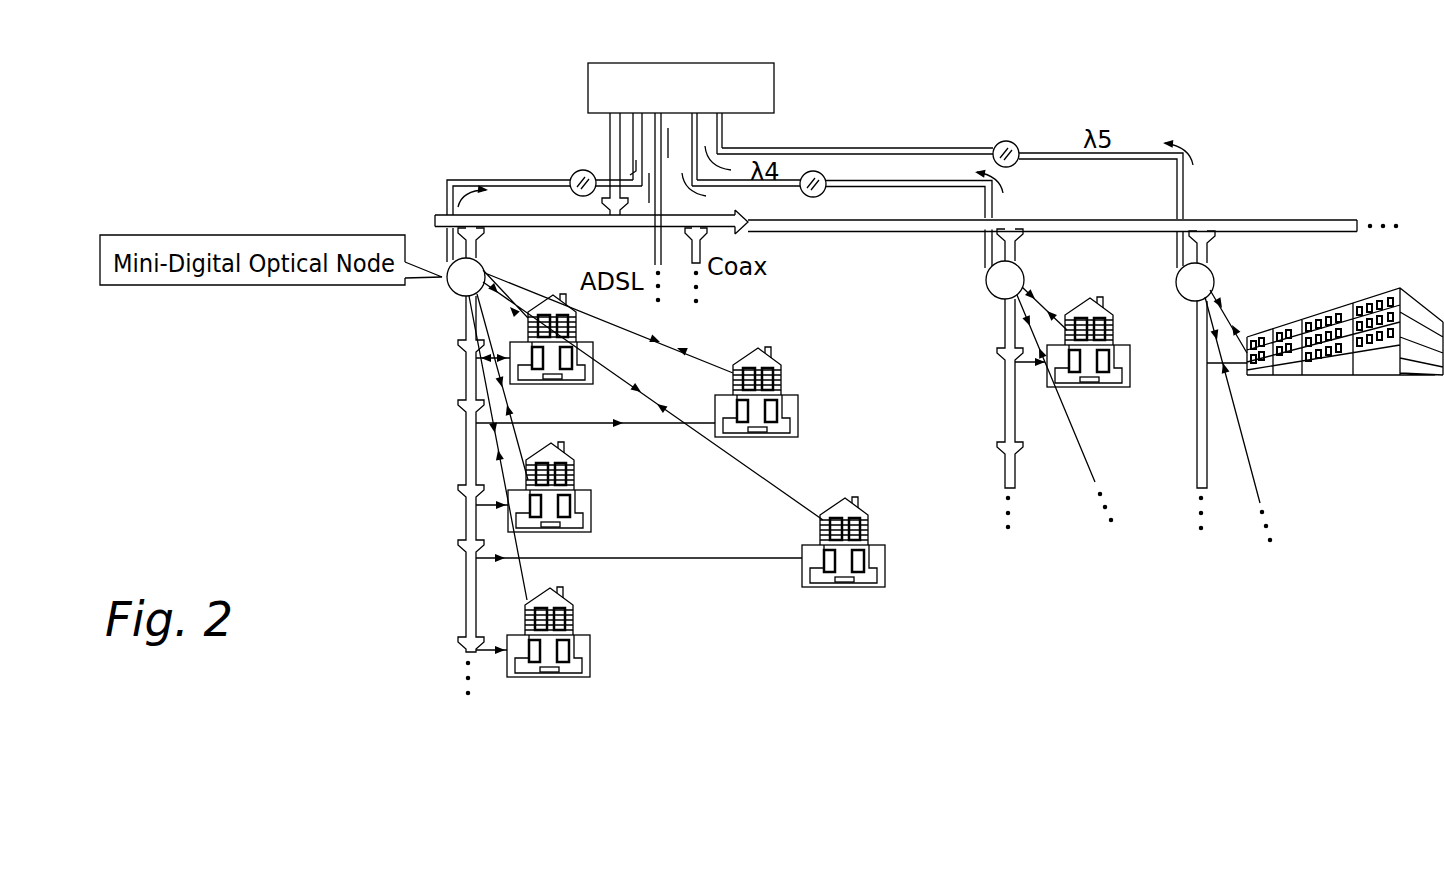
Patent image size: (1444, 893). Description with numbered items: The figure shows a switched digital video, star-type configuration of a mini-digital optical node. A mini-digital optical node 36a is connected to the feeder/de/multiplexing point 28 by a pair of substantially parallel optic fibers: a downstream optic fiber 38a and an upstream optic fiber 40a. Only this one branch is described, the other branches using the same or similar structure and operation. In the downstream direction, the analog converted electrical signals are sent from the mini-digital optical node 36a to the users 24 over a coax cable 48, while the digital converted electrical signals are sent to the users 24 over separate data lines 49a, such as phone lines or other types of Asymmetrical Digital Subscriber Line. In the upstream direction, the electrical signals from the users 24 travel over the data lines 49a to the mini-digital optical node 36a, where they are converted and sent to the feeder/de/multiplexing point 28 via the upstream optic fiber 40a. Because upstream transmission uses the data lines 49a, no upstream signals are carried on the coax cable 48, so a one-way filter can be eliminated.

The feeder/de/multiplexing point 28 is at (622, 62).
The downstream optic fiber 38a is at (468, 177).
The upstream optic fiber 40a is at (557, 183).
The mini-digital optical node 36a is at (453, 297).
The coax cable 48 is at (463, 453).
The data lines 49a is at (522, 316).
The users 24 is at (587, 385).